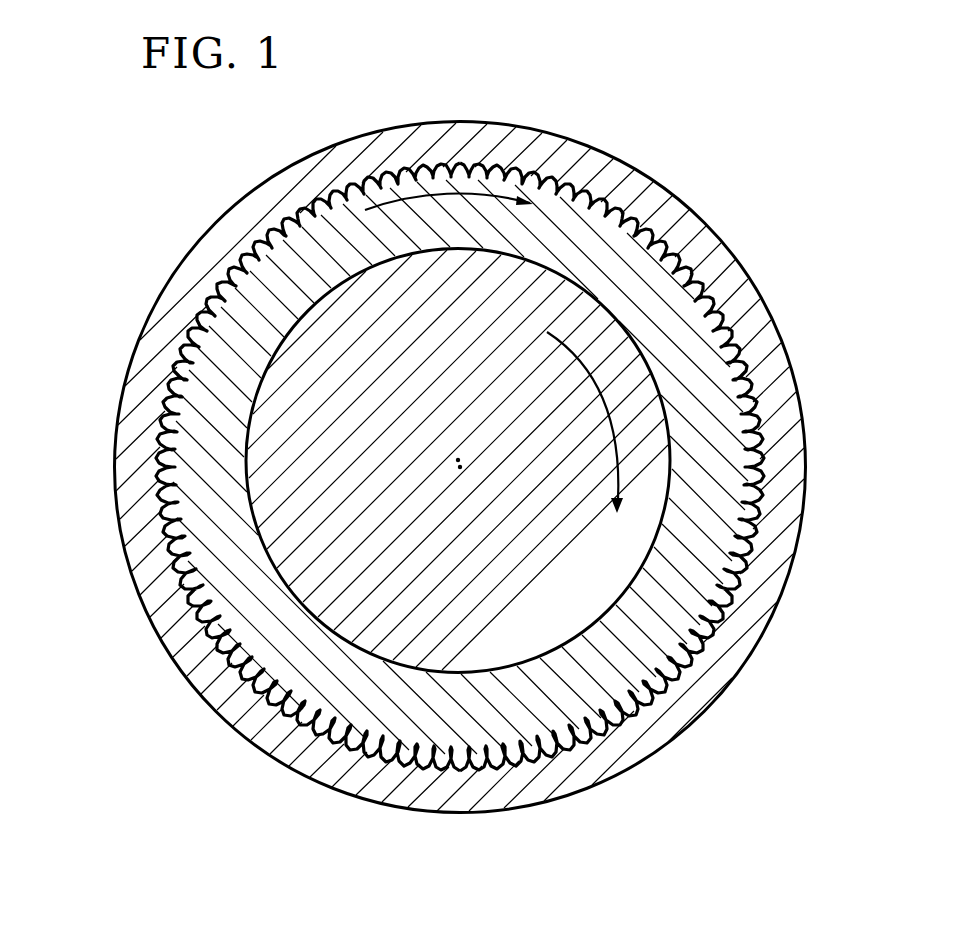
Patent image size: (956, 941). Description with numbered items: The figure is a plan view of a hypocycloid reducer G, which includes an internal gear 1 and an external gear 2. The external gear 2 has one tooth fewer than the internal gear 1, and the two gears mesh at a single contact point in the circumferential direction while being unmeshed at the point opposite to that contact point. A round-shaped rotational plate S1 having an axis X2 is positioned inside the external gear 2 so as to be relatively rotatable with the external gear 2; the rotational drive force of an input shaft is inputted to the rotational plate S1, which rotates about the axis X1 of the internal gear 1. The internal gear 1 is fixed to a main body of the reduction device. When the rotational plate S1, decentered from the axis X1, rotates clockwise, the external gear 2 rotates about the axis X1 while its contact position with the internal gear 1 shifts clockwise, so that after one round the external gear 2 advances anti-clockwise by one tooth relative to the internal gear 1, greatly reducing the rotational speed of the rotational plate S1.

The hypocycloid reducer G is at (140, 217).
The internal gear 1 is at (705, 233).
The external gear 2 is at (737, 470).
The rotational plate S1 is at (637, 545).
The axis of the internal gear X1 is at (459, 463).
The axis of the rotational plate X2 is at (459, 463).